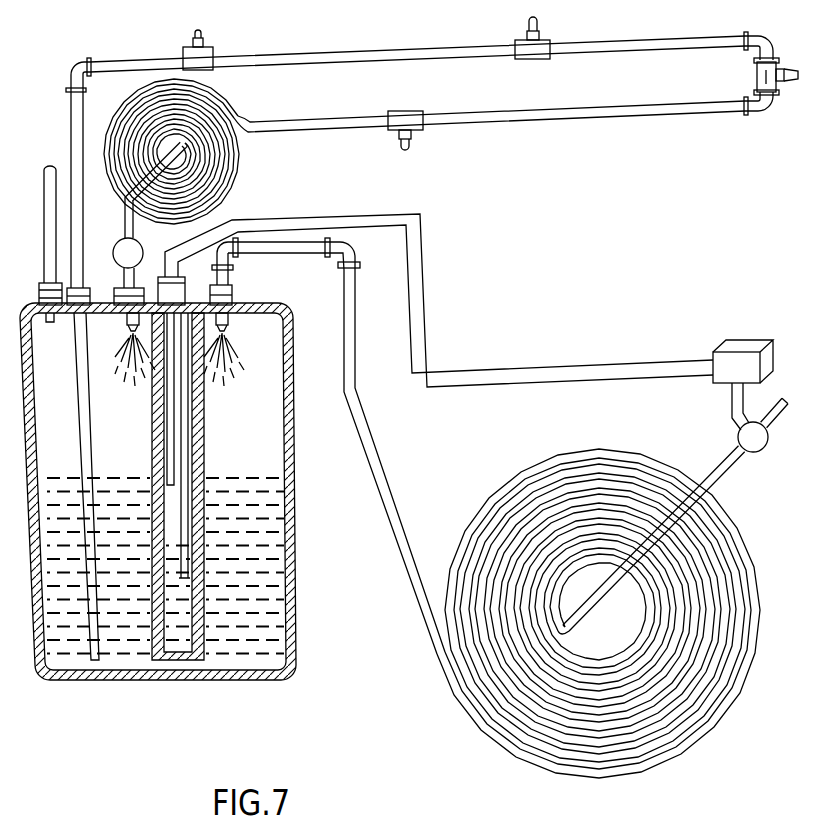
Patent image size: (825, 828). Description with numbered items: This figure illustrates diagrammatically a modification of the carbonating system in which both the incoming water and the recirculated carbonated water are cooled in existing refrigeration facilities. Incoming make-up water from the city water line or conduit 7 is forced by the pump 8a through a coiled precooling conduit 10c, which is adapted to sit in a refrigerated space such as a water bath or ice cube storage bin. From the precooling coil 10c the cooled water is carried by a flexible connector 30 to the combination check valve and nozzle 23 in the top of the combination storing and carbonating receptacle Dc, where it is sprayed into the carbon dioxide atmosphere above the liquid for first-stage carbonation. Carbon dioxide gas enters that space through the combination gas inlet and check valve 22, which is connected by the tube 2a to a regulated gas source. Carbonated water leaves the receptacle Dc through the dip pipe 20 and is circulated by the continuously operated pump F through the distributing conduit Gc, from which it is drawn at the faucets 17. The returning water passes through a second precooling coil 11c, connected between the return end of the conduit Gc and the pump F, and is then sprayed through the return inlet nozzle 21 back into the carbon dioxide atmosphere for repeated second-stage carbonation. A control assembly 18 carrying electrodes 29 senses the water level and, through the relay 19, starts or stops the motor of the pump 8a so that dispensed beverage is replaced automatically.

The tube or conduit 2a is at (44, 168).
The conduit 7 is at (776, 424).
The pump 8a is at (750, 417).
The precooling conduit 10c is at (738, 530).
The precooling coil 11c is at (233, 182).
The faucets 17 is at (205, 47).
The control assembly 18 is at (184, 285).
The relay 19 is at (746, 351).
The dip pipe 20 is at (96, 626).
The return inlet nozzle 21 is at (128, 322).
The combination gas inlet and check valve 22 is at (40, 293).
The combination check valve and nozzle 23 is at (233, 294).
The electrodes 29 is at (160, 412).
The conduit or flexible connector 30 is at (392, 496).
The combination storing and carbonating receptacle Dc is at (158, 491).
The circulating pump F is at (128, 263).
The distributing conduit Gc is at (396, 54).